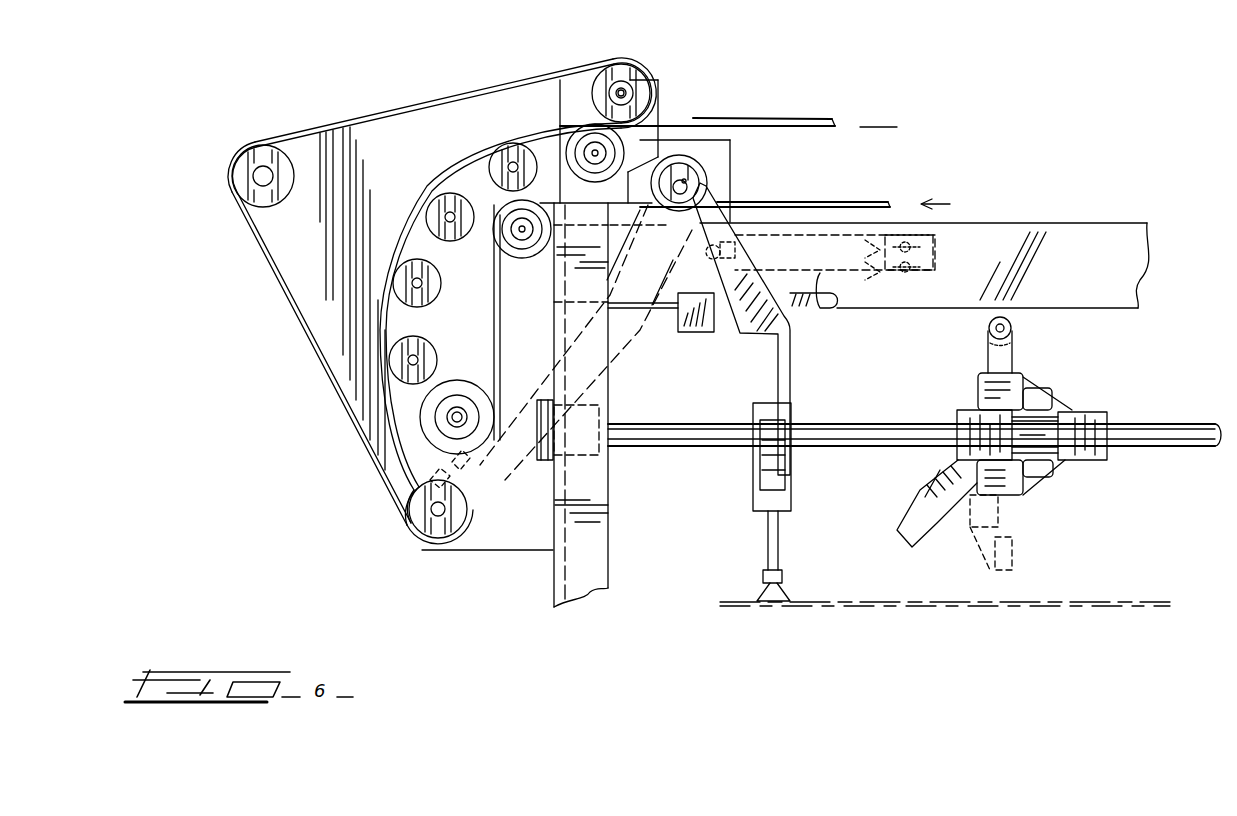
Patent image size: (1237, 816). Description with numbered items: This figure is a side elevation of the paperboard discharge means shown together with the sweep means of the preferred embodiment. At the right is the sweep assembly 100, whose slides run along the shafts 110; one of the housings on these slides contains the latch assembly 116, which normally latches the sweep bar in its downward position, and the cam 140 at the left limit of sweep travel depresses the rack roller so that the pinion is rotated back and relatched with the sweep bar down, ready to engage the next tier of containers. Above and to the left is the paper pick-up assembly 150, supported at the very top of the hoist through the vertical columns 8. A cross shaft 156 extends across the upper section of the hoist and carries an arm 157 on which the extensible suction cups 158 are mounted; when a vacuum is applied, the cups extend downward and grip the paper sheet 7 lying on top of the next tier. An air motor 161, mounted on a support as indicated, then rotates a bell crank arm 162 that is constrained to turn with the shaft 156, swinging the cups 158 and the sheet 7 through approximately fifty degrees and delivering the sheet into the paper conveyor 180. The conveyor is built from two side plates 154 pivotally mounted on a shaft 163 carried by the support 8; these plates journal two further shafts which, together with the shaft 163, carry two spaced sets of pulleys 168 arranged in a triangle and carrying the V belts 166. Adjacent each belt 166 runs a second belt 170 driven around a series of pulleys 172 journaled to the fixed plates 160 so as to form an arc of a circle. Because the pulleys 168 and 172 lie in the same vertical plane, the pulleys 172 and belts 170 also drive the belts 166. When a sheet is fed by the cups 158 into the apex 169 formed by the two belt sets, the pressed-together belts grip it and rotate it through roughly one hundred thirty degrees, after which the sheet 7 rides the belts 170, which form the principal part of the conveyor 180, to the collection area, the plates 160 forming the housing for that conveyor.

The paper sheet 7 is at (773, 122).
The vertical column 8 is at (603, 569).
The sweep assembly 100 is at (1025, 443).
The shaft 110 is at (1150, 428).
The latch assembly 116 is at (1090, 372).
The cam 140 is at (708, 332).
The paper pick-up assembly 150 is at (357, 304).
The side plate 154 is at (322, 305).
The cross shaft 156 is at (695, 182).
The arm 157 is at (792, 358).
The suction cup 158 is at (792, 498).
The fixed plate 160 is at (486, 362).
The air motor 161 is at (826, 280).
The bell crank arm 162 is at (697, 233).
The shaft 163 is at (626, 92).
The V belt 166 is at (588, 63).
The pulley 168 is at (248, 183).
The apex 169 is at (445, 464).
The second belt 170 is at (670, 124).
The pulley 172 is at (614, 149).
The paper conveyor 180 is at (874, 104).